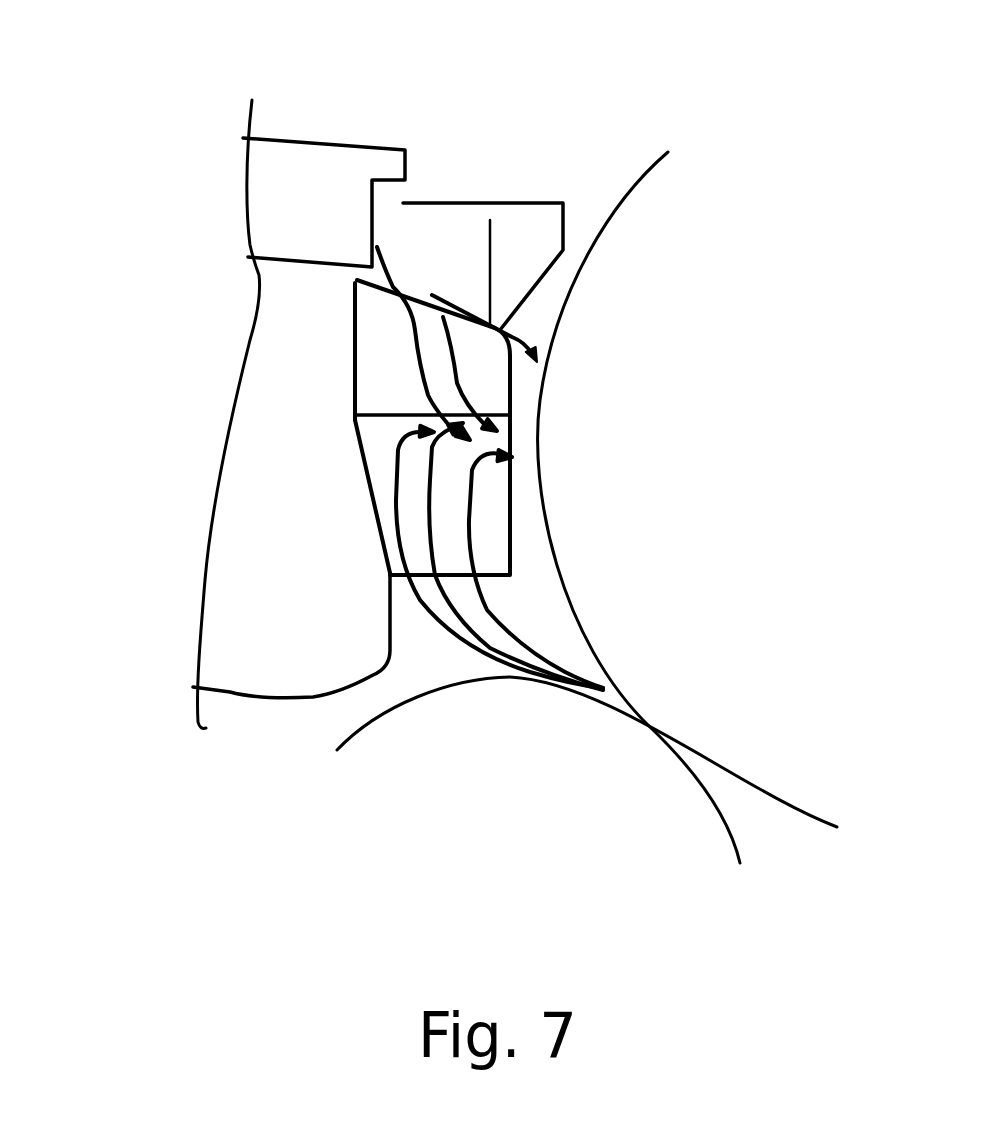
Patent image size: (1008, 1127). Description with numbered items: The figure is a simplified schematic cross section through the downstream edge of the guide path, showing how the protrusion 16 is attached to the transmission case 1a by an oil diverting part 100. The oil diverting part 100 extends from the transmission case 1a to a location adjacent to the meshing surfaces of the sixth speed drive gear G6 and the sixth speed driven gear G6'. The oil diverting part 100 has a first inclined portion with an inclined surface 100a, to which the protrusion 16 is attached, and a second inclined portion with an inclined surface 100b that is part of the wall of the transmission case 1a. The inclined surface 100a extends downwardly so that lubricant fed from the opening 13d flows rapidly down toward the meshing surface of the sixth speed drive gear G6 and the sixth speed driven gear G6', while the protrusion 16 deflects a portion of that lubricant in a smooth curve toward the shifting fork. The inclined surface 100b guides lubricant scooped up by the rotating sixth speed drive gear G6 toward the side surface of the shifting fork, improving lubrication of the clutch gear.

The transmission case 1a is at (280, 387).
The opening 13d is at (375, 217).
The protrusion 16 is at (447, 227).
The oil diverting part 100 is at (387, 378).
The inclined surface 100a is at (478, 325).
The inclined surface 100b is at (377, 463).
The sixth speed drive gear G6 is at (699, 507).
The sixth speed driven gear G6' is at (587, 765).